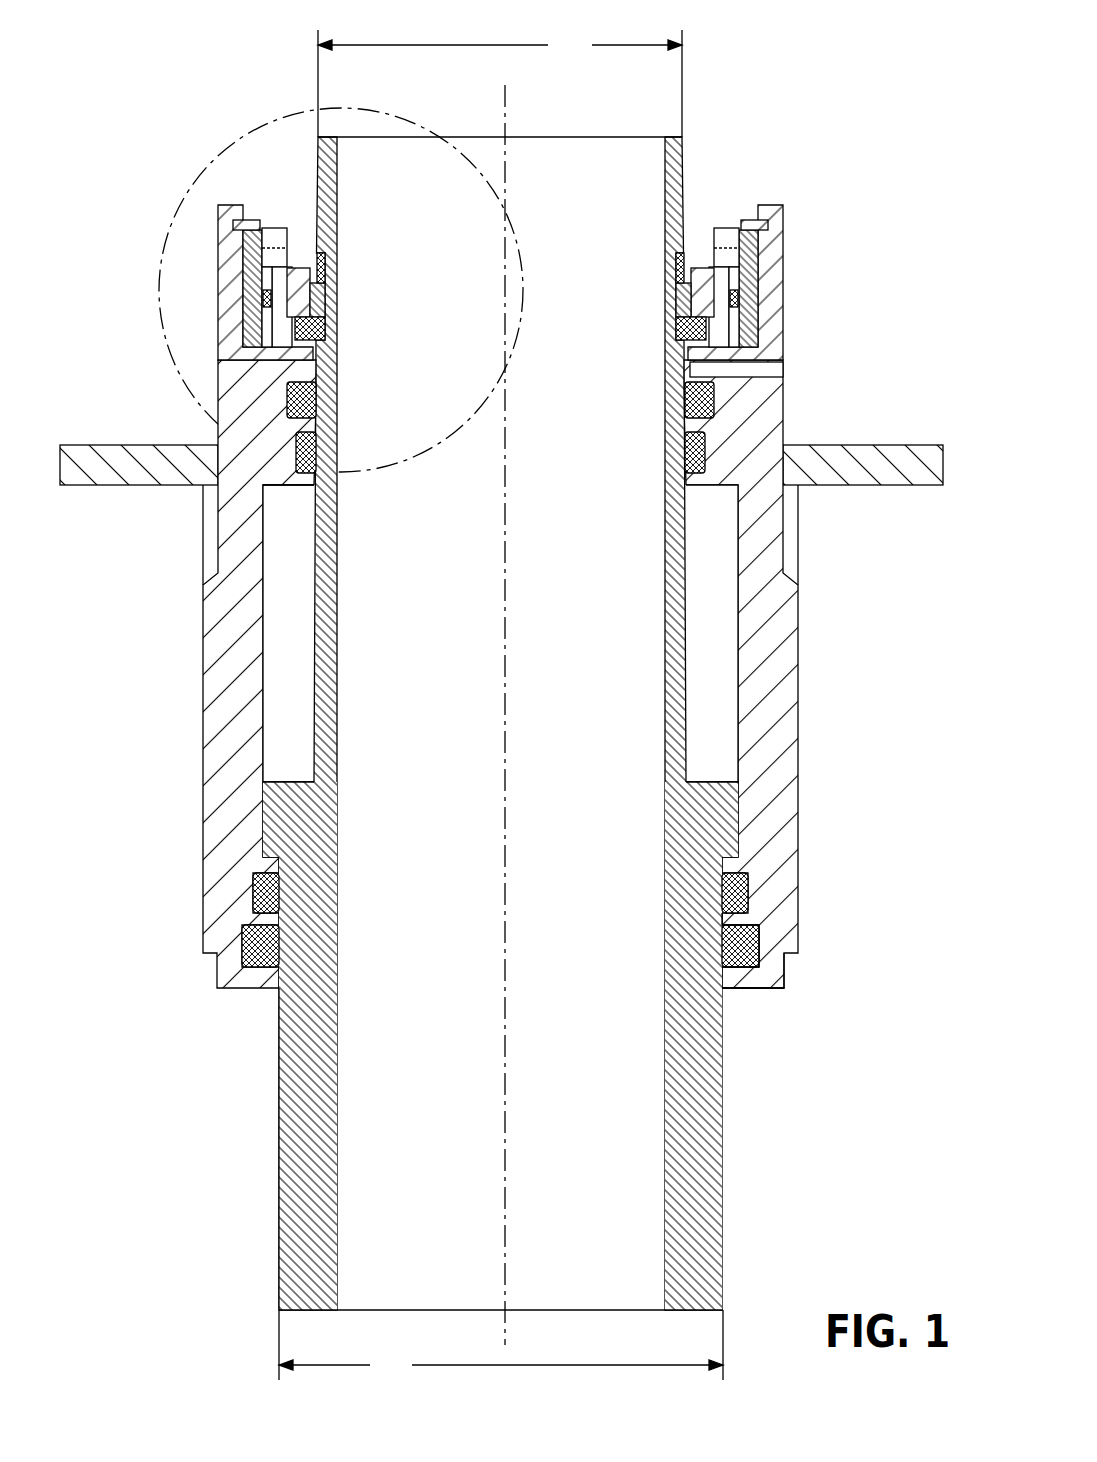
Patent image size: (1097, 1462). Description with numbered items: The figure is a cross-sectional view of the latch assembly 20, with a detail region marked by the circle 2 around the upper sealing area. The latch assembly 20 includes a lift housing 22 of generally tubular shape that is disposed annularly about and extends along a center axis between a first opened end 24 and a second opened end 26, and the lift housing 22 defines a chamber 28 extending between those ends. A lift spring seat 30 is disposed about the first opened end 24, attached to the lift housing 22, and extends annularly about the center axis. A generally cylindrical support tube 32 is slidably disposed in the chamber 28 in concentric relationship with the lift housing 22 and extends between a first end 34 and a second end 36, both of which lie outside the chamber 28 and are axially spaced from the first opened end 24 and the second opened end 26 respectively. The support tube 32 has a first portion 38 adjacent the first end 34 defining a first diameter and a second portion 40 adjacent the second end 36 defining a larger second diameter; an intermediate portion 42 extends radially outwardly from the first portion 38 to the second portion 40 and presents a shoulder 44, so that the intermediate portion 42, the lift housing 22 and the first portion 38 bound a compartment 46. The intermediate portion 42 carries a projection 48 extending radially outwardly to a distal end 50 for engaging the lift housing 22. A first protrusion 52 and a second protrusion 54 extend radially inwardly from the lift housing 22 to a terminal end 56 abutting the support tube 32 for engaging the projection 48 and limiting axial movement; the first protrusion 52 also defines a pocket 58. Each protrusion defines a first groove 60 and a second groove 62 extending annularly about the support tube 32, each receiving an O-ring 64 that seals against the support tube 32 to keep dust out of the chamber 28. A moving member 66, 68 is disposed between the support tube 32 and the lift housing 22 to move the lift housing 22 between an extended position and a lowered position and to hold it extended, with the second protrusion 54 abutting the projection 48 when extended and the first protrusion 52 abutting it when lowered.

The latch assembly 20 is at (505, 125).
The detail circle 2 is at (167, 214).
The lift housing 22 is at (796, 401).
The first opened end 24 is at (760, 204).
The second opened end 26 is at (790, 993).
The chamber 28 is at (736, 626).
The lift spring seat 30 is at (903, 487).
The support tube 32 is at (268, 1176).
The first end 34 is at (325, 137).
The second end 36 is at (697, 1308).
The first portion 38 is at (317, 577).
The second portion 40 is at (704, 1122).
The intermediate portion 42 is at (303, 818).
The shoulder 44 is at (292, 780).
The compartment 46 is at (277, 645).
The projection 48 is at (722, 835).
The distal end 50 is at (740, 788).
The first protrusion 52 is at (753, 430).
The second protrusion 54 is at (746, 917).
The terminal end 56 is at (316, 422).
The pocket 58 is at (745, 268).
The first groove 60 is at (292, 470).
The second groove 62 is at (255, 908).
The O-ring 64 is at (316, 402).
The moving member 66 is at (738, 296).
The moving member 68 is at (265, 216).